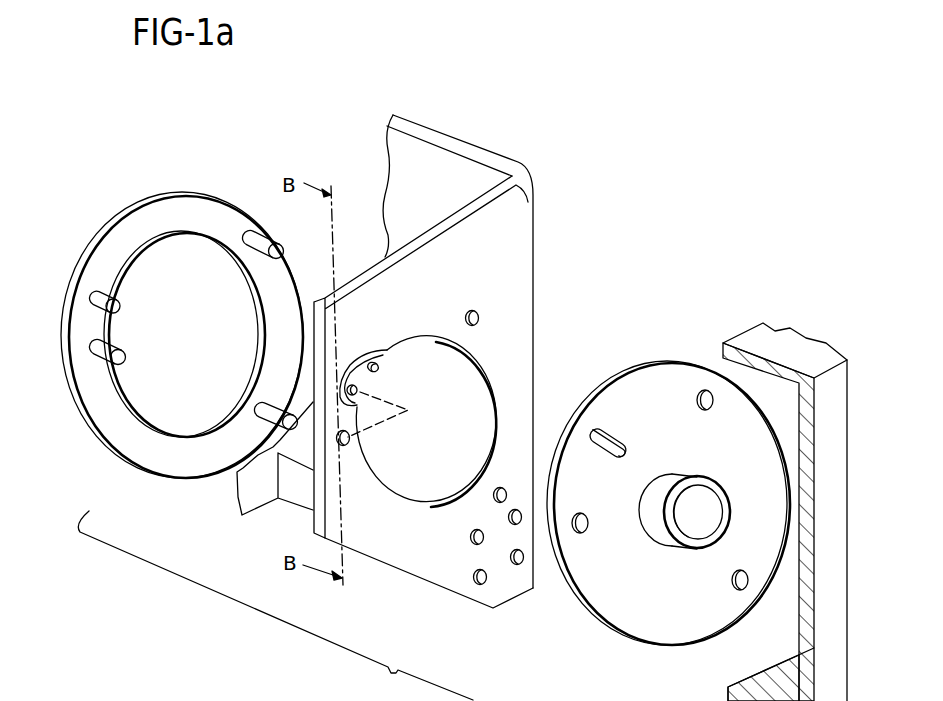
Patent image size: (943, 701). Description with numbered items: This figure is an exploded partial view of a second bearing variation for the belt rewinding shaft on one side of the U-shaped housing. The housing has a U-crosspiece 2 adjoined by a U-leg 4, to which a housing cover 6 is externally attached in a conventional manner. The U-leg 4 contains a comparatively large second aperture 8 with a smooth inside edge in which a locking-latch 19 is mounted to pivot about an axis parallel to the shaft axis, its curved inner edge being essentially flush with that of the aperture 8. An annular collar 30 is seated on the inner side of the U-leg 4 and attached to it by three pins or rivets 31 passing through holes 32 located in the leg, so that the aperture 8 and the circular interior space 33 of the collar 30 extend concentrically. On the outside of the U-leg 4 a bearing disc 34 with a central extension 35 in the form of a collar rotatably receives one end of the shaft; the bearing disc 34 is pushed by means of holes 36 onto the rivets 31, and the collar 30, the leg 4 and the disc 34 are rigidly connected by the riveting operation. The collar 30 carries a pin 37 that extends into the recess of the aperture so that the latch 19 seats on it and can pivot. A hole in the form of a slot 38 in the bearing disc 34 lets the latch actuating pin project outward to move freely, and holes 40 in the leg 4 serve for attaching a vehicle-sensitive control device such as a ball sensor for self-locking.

The U-crosspiece 2 is at (386, 152).
The U-leg 4 is at (442, 289).
The housing cover 6 is at (780, 342).
The second aperture 8 is at (441, 427).
The locking-latch 19 is at (363, 380).
The annular collar 30 is at (156, 207).
The pins or rivets 31 is at (262, 240).
The holes 32 is at (476, 312).
The circular interior space 33 is at (194, 348).
The bearing disc 34 is at (615, 398).
The central extension 35 is at (655, 532).
The holes 36 is at (703, 390).
The pin 37 is at (100, 296).
The hole in the form of a slot 38 is at (594, 432).
The holes 40 is at (518, 565).